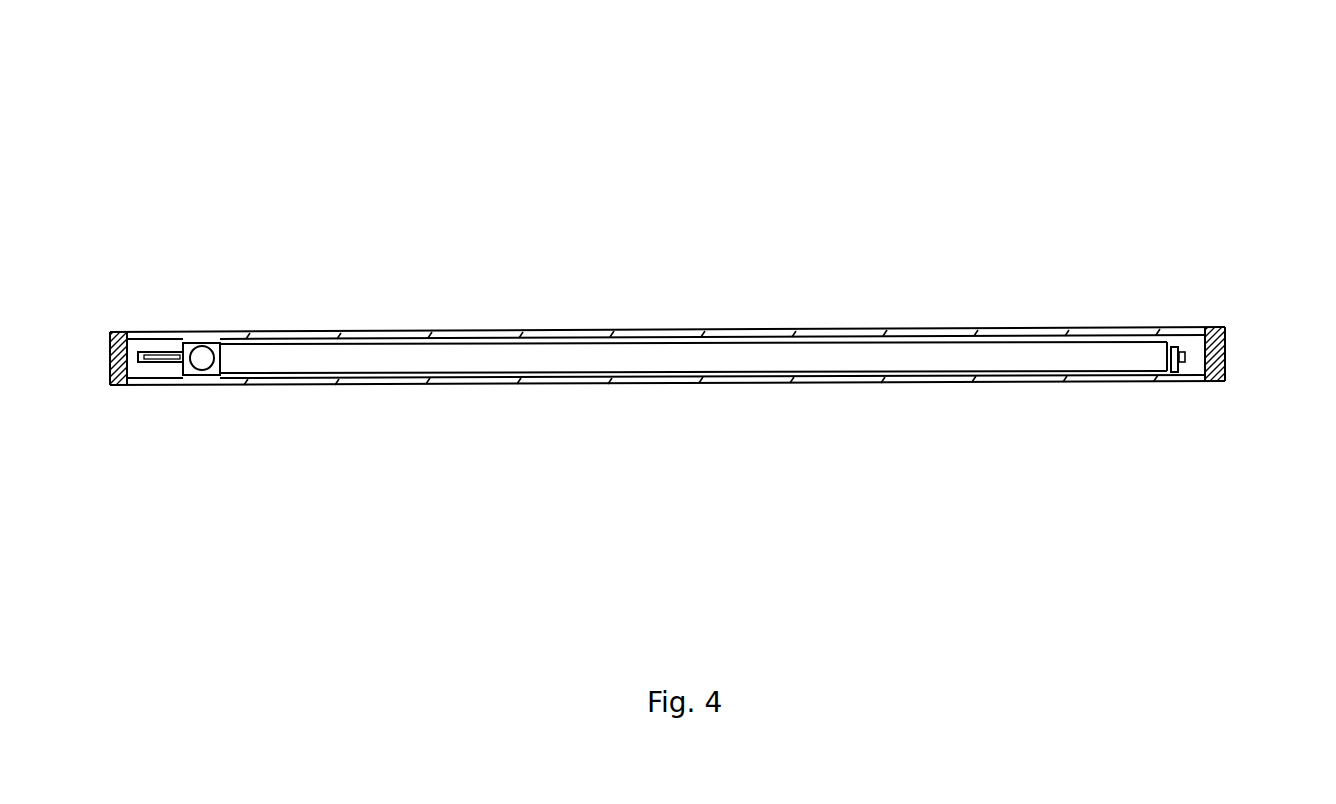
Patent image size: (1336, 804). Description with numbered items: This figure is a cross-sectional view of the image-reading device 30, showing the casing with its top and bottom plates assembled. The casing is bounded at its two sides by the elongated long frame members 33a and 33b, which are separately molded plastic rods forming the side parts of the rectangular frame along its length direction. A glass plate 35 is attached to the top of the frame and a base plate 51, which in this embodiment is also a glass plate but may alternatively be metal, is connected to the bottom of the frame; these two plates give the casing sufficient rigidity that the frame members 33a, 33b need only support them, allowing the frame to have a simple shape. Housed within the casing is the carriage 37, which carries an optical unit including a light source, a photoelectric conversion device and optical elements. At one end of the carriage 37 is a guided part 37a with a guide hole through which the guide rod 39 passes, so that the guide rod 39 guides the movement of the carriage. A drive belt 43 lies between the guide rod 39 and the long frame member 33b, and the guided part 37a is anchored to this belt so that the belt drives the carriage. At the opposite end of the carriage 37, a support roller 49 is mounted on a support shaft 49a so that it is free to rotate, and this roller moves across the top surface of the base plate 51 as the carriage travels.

The image-reading device 30 is at (724, 203).
The long frame member 33a is at (1228, 382).
The long frame member 33b is at (107, 388).
The glass plate 35 is at (638, 330).
The carriage 37 is at (808, 355).
The guided part 37a is at (222, 333).
The guide rod 39 is at (197, 385).
The drive belt 43 is at (148, 352).
The support roller 49 is at (1180, 350).
The support shaft 49a is at (1190, 345).
The base plate 51 is at (650, 380).